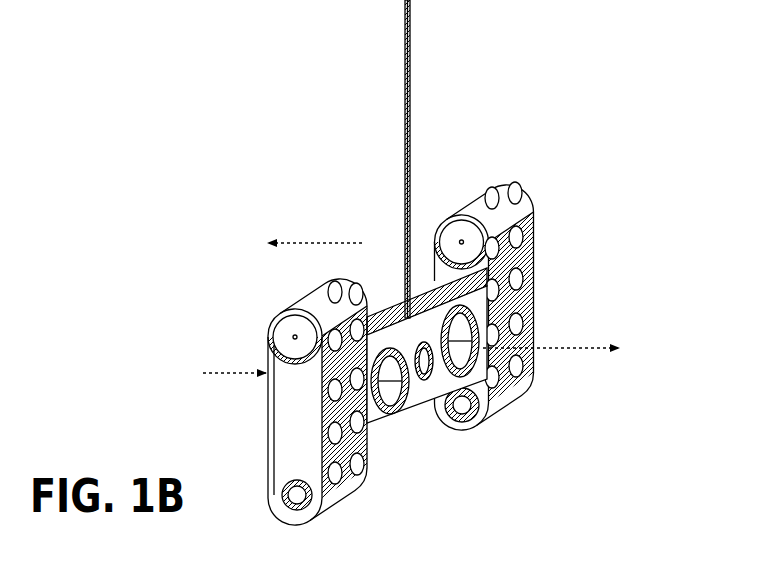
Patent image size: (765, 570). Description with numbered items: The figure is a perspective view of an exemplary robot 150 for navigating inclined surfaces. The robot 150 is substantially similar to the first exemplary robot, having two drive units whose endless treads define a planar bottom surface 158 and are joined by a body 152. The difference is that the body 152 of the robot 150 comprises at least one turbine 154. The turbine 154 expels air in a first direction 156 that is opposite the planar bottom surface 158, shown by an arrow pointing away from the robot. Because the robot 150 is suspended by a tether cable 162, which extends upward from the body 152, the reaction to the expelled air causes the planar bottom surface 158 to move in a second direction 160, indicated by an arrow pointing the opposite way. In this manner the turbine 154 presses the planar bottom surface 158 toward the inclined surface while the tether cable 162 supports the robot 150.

The robot 150 is at (227, 293).
The body 152 is at (425, 395).
The turbine 154 is at (493, 327).
The first direction 156 is at (577, 350).
The planar bottom surface 158 is at (212, 375).
The second direction 160 is at (322, 243).
The tether cable 162 is at (410, 68).